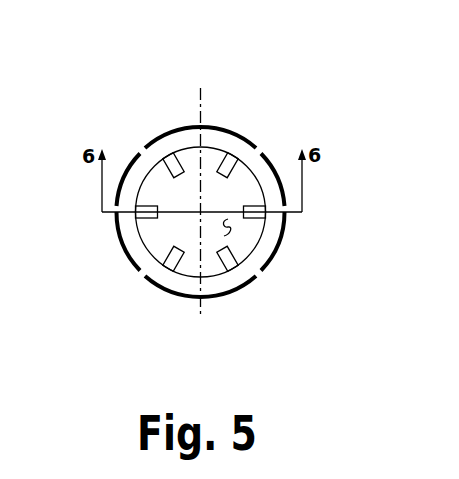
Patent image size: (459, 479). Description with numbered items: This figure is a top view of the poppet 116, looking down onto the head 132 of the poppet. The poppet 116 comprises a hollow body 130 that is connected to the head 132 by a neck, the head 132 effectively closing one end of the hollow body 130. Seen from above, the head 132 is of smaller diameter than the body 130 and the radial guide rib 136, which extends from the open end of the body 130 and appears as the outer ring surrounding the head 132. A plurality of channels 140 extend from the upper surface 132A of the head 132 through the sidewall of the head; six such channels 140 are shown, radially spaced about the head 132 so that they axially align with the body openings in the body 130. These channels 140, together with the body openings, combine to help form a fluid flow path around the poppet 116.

The poppet 116 is at (280, 66).
The hollow body 130 is at (220, 130).
The radial guide rib 136 is at (186, 128).
The head 132 is at (262, 165).
The upper surface 132A is at (231, 231).
The channels 140 is at (172, 162).